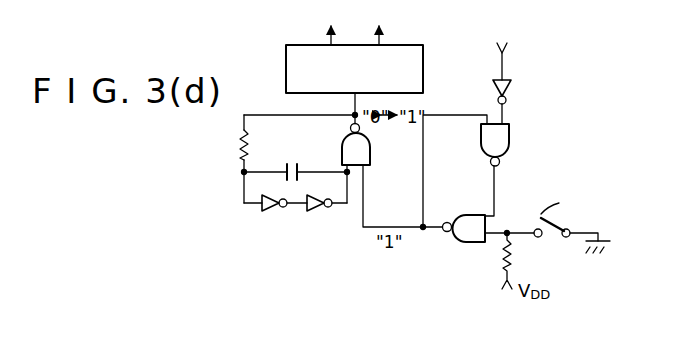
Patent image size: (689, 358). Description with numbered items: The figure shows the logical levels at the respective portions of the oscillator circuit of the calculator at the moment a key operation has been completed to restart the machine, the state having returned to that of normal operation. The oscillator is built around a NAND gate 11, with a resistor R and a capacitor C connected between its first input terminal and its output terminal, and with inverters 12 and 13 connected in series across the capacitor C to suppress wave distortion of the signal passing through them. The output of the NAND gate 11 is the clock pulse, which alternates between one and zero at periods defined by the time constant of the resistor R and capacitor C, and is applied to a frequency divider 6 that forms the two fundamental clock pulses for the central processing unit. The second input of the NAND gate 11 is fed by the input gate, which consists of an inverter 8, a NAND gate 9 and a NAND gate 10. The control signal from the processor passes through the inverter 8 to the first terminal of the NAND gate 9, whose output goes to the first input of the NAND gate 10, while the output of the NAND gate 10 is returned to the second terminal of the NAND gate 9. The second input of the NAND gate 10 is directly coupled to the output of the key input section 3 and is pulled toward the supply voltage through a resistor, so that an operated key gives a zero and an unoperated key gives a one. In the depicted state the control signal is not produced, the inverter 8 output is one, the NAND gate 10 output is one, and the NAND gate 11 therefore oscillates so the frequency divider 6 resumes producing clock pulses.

The key input section 3 is at (566, 220).
The frequency divider 6 is at (423, 68).
The inverter 8 is at (506, 90).
The NAND gate 9 is at (509, 140).
The NAND gate 10 is at (457, 215).
The NAND gate 11 is at (370, 148).
The inverter 12 is at (272, 208).
The inverter 13 is at (317, 208).
The resistor R is at (249, 145).
The capacitor C is at (291, 163).